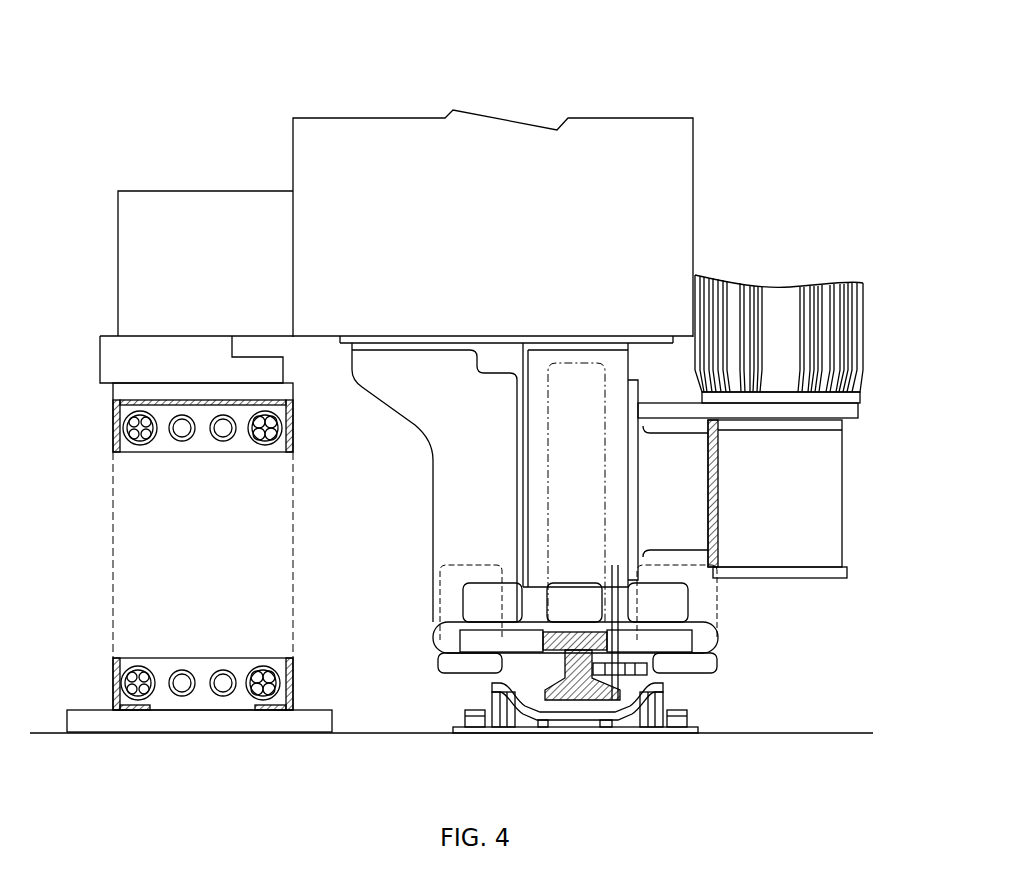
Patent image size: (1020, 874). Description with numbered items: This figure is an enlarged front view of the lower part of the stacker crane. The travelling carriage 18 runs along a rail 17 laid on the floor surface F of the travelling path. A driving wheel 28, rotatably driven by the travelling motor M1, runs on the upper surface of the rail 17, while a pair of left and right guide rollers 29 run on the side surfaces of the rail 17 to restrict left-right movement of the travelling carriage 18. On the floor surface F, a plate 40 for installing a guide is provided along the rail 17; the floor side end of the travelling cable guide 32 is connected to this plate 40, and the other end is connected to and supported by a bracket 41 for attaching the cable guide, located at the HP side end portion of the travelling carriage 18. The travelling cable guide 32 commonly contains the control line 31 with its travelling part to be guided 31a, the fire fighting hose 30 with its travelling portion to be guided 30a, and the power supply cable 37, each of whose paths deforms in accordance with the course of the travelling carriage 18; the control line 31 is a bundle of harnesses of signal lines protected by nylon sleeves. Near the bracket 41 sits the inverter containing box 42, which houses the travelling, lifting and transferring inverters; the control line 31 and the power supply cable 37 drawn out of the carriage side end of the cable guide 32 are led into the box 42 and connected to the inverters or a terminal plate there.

The inverter containing box 42 is at (572, 142).
The bracket for attaching cable guide 41 is at (272, 369).
The plate for installing guide 40 is at (310, 725).
The travelling motor M1 is at (783, 312).
The travelling carriage 18 is at (419, 502).
The driving wheel 28 is at (598, 458).
The guide rollers 29 is at (472, 640).
The rail 17 is at (486, 692).
The travelling cable guide 32 is at (113, 430).
The travelling part to be guided 31a is at (140, 445).
The control line 31 is at (123, 621).
The travelling portion to be guided 30a is at (182, 441).
The fire fighting hose 30 is at (202, 623).
The power supply cable 37 is at (265, 445).
The floor surface F is at (805, 728).